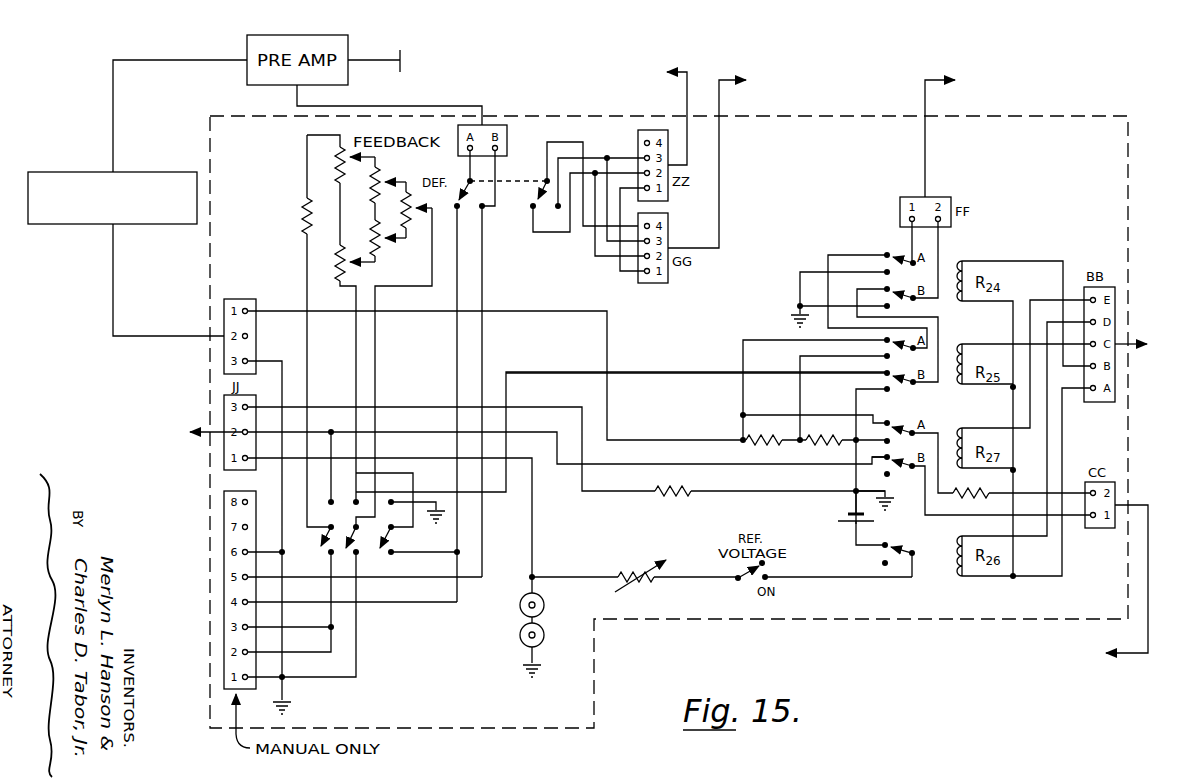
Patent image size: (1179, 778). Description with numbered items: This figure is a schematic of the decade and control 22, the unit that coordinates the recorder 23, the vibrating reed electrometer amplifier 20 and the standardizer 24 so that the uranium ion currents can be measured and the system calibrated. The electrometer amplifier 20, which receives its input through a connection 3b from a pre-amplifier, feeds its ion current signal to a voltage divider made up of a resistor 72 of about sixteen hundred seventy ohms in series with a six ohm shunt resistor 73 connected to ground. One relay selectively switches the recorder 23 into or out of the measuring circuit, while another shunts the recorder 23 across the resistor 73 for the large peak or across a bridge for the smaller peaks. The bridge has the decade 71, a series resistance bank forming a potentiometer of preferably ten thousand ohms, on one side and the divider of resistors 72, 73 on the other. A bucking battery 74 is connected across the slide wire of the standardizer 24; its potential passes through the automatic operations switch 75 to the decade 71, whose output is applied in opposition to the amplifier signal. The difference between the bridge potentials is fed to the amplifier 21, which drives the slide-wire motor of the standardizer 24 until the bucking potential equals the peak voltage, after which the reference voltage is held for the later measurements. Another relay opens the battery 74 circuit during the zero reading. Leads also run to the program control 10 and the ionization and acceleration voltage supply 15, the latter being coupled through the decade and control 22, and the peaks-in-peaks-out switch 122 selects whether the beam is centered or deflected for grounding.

The connector to ion source 3b is at (403, 56).
The vibrating reed electrometer amplifier 20 is at (97, 172).
The decade and control 22 is at (210, 137).
The decade potentiometer 71 is at (330, 196).
The resistor 72 is at (760, 444).
The shunt resistor 73 is at (828, 444).
The battery 74 is at (846, 518).
The automatic operations switch 75 is at (328, 529).
The peaks-in-peaks-out switch 122 is at (547, 207).
The program control 10 is at (918, 254).
The ionization and acceleration voltage supply 15 is at (582, 107).
The amplifier 21 is at (1060, 590).
The recorder 23 is at (1012, 134).
The standardizer 24 is at (131, 443).